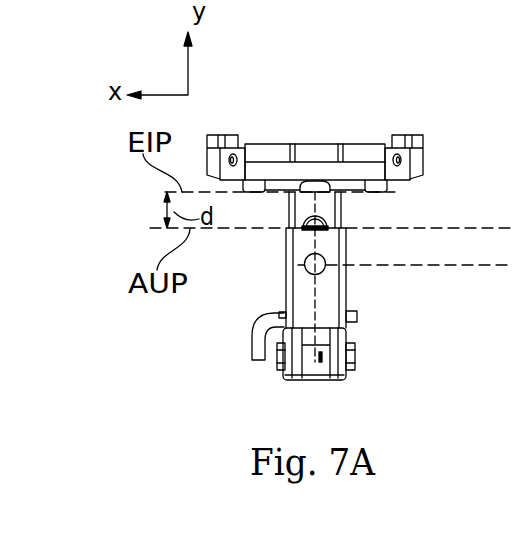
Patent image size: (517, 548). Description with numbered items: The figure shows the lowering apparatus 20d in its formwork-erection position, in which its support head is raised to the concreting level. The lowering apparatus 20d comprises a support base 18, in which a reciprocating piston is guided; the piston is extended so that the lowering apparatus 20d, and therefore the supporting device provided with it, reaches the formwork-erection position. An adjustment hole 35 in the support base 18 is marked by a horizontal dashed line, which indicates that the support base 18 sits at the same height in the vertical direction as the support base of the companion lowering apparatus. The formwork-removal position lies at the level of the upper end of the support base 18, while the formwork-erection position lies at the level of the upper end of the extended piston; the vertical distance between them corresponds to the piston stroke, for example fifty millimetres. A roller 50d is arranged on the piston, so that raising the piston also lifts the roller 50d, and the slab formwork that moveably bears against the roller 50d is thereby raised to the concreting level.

The roller 50d is at (313, 153).
The lowering apparatus 20d is at (281, 286).
The support base 18 is at (327, 293).
The adjustment hole 35 is at (325, 259).